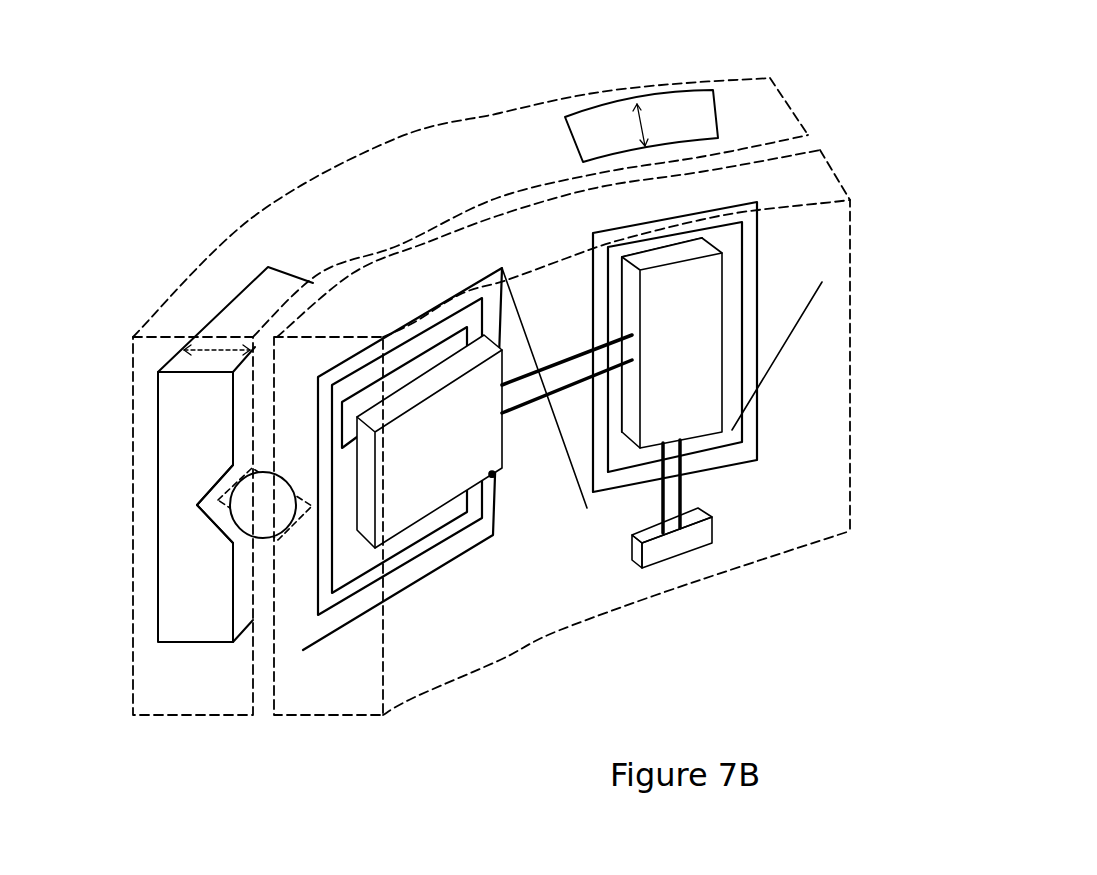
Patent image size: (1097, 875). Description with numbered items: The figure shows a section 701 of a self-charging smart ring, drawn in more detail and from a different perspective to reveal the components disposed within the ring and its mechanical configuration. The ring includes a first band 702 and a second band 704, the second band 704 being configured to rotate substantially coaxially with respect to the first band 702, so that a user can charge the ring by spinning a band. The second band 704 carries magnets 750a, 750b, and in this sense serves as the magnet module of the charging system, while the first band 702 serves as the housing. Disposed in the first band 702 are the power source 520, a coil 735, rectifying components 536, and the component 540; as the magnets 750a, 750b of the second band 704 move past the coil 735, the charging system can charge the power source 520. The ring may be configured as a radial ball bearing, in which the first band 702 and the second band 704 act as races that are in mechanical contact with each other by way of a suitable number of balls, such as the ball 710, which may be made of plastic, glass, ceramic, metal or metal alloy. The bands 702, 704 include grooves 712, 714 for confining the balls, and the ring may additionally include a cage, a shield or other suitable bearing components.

The section 701 is at (397, 130).
The first band 702 is at (338, 718).
The second band 704 is at (192, 718).
The ball 710 is at (263, 538).
The groove 712 is at (293, 483).
The groove 714 is at (237, 525).
The coil 735 is at (443, 567).
The rectifying components 536 is at (502, 470).
The power source 520 is at (700, 440).
The component 540 is at (685, 552).
The magnet 750a is at (238, 292).
The magnet 750b is at (680, 86).